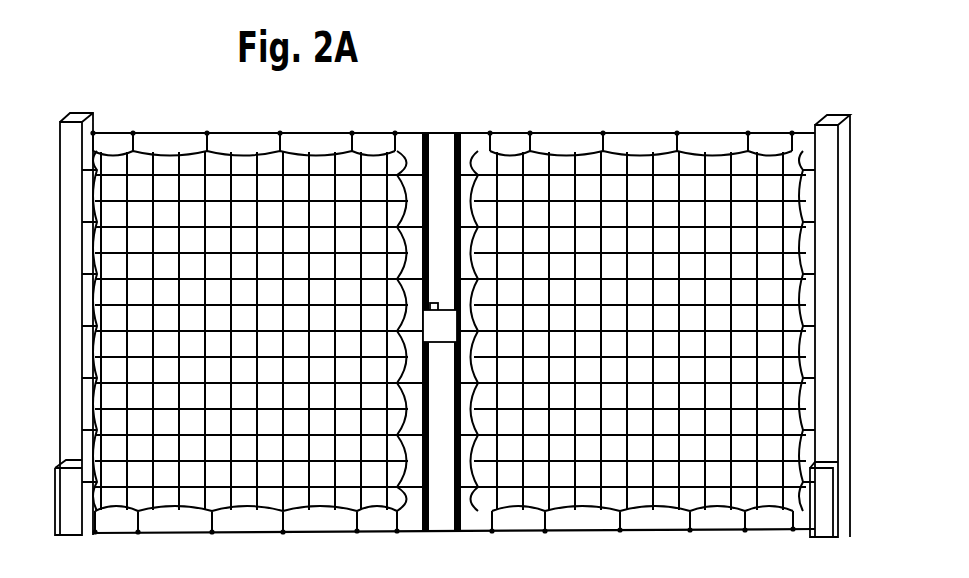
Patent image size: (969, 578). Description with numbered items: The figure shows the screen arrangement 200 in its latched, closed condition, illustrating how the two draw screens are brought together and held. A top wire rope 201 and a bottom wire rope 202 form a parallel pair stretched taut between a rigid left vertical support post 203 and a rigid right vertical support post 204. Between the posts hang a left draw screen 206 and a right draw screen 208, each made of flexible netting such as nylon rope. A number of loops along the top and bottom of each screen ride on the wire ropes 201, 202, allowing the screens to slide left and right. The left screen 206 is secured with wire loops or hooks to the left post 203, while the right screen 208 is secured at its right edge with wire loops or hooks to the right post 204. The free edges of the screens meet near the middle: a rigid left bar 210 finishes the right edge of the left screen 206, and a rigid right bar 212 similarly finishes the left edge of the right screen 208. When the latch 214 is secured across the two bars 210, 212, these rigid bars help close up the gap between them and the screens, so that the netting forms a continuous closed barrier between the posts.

The fence assembly 200 is at (135, 80).
The top wire rope 201 is at (180, 132).
The bottom wire rope 202 is at (306, 534).
The left vertical support post 203 is at (60, 262).
The right vertical support post 204 is at (833, 310).
The left draw screen 206 is at (355, 177).
The right draw screen 208 is at (622, 200).
The rigid left bar 210 is at (426, 133).
The rigid right bar 212 is at (458, 133).
The latch 214 is at (428, 330).